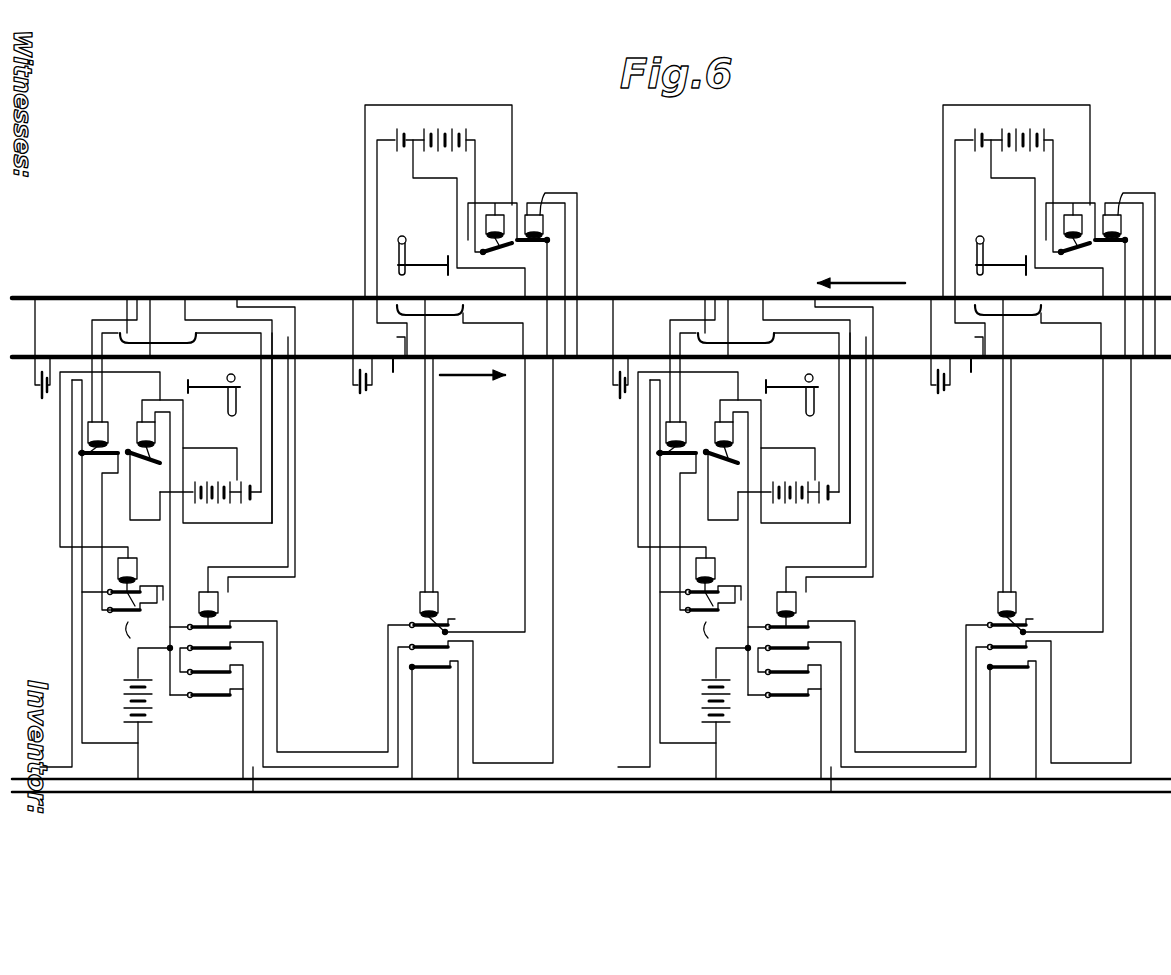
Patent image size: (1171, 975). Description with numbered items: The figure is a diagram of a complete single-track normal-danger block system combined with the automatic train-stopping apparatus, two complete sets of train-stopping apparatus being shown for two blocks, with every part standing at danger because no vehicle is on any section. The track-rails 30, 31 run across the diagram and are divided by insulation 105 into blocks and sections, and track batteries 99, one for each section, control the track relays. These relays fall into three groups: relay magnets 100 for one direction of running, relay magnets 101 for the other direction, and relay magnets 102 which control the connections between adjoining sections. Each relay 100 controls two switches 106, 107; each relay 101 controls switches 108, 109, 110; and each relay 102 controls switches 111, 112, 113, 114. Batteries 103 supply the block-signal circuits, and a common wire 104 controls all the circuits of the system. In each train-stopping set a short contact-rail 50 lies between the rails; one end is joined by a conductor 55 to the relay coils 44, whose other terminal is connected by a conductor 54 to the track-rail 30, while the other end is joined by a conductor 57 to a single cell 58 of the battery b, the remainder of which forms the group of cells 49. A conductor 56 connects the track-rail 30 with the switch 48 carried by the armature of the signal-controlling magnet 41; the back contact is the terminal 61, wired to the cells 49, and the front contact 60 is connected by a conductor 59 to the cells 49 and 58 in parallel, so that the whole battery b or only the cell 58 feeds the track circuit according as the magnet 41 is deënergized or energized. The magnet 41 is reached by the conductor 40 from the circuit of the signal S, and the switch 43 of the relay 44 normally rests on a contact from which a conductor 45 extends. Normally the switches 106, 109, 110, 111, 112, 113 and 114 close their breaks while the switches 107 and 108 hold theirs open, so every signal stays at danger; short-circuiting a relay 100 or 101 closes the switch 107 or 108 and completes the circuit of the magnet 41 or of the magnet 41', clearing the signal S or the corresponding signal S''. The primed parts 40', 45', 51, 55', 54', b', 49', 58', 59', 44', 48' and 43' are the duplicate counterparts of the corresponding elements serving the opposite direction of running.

The track-rail 30 is at (662, 289).
The track-rail 31 is at (592, 360).
The common wire 104 is at (443, 784).
The track batteries 99 is at (932, 392).
The insulation 105 is at (196, 300).
The conductor 54 is at (386, 360).
The conductor 55 is at (417, 304).
The contact-rail 50 is at (148, 346).
The conductor 57 is at (531, 462).
The relay coils 44 is at (400, 390).
The relay switch 43 is at (388, 528).
The electrical controlling device or magnet 41 is at (449, 540).
The switch 48 is at (432, 483).
The conductor 45 is at (394, 561).
The terminal 61 is at (451, 502).
The group of cells 49 is at (507, 483).
The single cell 58 is at (539, 483).
The battery b is at (516, 487).
The conductor 56 is at (215, 527).
The conductor 59 is at (436, 569).
The front contact 60 is at (160, 448).
The conductor 40 is at (484, 415).
The signal S is at (503, 395).
The relay magnet 100 is at (132, 565).
The switch 106 is at (411, 613).
The switch 107 is at (440, 655).
The batteries 103 is at (408, 729).
The relay magnet 102 is at (218, 604).
The switch 111 is at (579, 686).
The switch 112 is at (584, 717).
The switch 113 is at (505, 722).
The switch 114 is at (495, 707).
The relay magnet 101 is at (737, 487).
The switch 108 is at (450, 621).
The switch 109 is at (455, 648).
The switch 110 is at (440, 670).
The conductor 40' is at (793, 449).
The conductor 45' is at (861, 447).
The relay armature contact 51 is at (719, 327).
The conductor 55' is at (782, 331).
The conductor 54' is at (728, 327).
The battery b' is at (727, 201).
The battery 49' is at (745, 182).
The condenser 58' is at (741, 213).
The conductor 59' is at (1007, 190).
The switch S'' is at (712, 254).
The signal magnet 41' is at (781, 213).
The electromagnet 44' is at (840, 261).
The armature contact 48' is at (788, 257).
The armature contact 43' is at (822, 298).